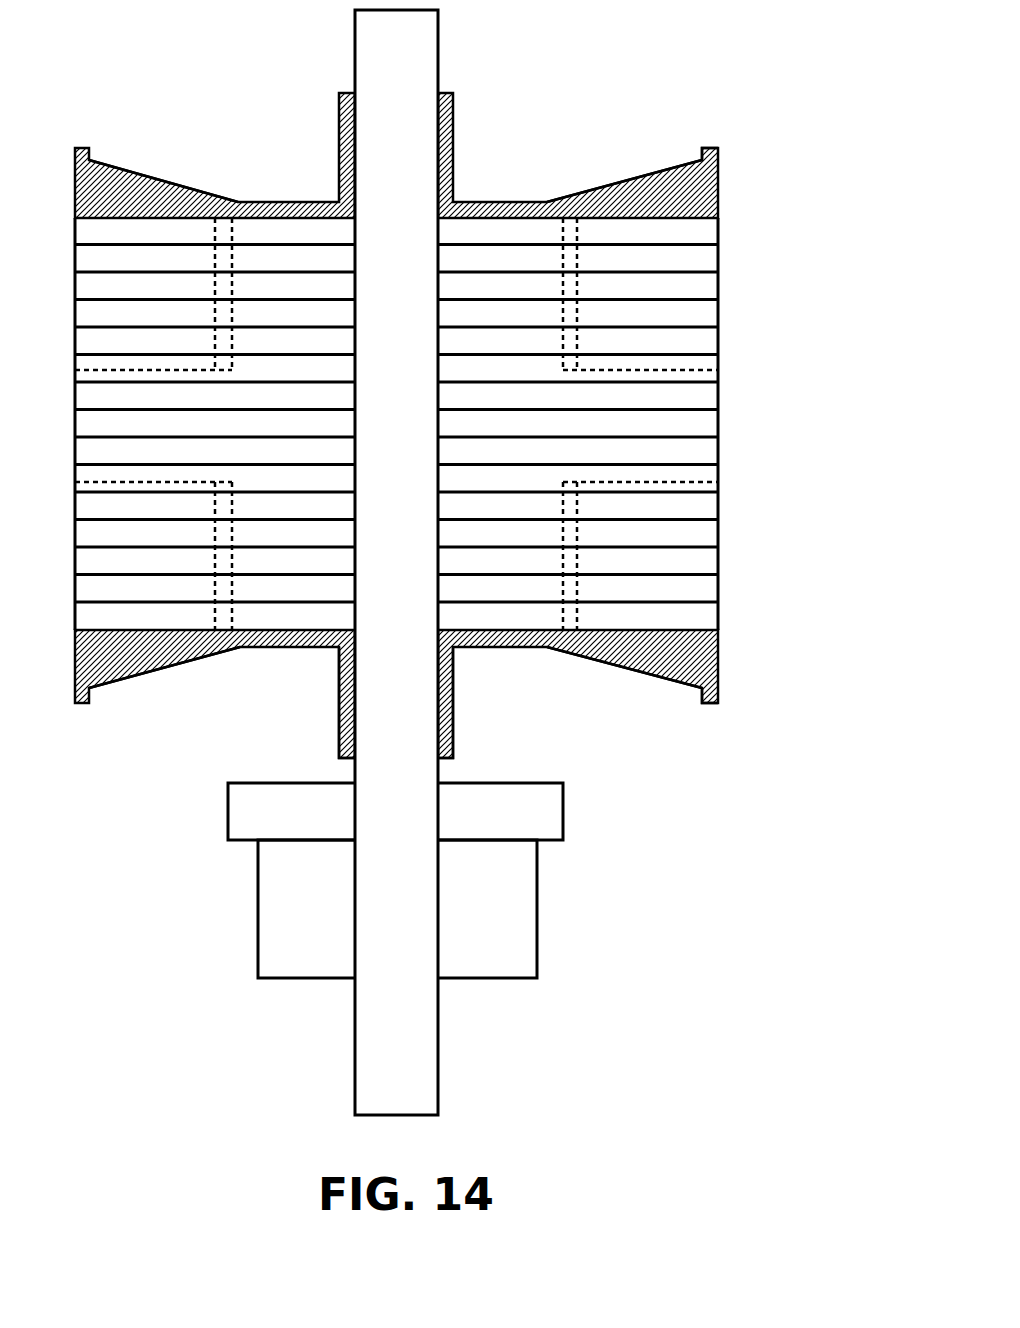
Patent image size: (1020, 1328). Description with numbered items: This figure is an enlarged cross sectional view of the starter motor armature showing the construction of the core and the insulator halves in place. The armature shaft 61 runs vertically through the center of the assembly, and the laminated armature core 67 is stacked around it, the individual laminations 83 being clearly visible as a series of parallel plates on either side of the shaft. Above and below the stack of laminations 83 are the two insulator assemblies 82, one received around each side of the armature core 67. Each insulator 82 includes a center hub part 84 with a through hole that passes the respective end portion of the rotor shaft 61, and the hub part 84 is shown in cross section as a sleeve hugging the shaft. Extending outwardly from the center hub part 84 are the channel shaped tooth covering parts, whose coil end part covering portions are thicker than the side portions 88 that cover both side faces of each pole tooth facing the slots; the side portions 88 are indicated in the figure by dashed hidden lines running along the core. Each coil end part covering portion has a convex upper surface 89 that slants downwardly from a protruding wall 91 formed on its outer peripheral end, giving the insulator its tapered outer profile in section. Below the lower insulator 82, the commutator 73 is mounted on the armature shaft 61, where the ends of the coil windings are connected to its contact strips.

The armature shaft 61 is at (424, 66).
The armature core 67 is at (726, 383).
The commutator 73 is at (552, 928).
The insulator assembly 82 is at (720, 710).
The laminations 83 is at (280, 203).
The center hub part 84 is at (340, 750).
The side portions 88 is at (705, 595).
The convex upper surface 89 is at (663, 172).
The protruding wall 91 is at (710, 148).